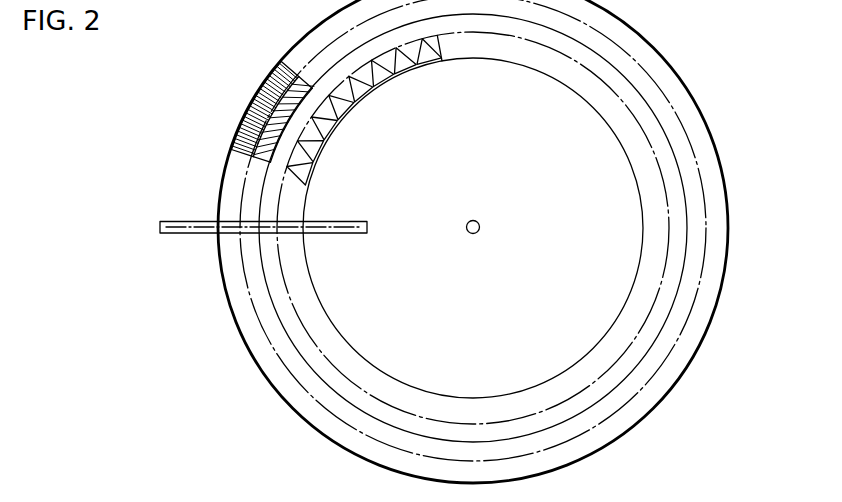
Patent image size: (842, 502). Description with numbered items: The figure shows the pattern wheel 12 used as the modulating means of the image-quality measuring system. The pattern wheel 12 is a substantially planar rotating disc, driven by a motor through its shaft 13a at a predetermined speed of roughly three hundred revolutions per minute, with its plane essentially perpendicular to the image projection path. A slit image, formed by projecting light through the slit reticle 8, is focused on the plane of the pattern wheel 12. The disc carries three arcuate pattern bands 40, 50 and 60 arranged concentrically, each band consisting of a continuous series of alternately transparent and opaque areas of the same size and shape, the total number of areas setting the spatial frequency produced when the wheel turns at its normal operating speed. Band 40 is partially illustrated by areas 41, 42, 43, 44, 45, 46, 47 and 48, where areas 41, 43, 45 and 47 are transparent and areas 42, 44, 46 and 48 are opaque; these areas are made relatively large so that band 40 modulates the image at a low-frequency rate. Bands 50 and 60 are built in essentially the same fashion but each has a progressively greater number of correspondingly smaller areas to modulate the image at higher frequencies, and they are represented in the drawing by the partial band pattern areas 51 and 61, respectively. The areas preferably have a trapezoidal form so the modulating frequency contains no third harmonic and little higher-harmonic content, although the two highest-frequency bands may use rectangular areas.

The pattern wheel 12 is at (668, 50).
The pattern band 40 is at (643, 110).
The pattern band 50 is at (678, 137).
The pattern band 60 is at (712, 168).
The slit reticle 8 is at (186, 220).
The shaft 13a is at (477, 220).
The partial band pattern area 61 is at (250, 107).
The partial band pattern area 51 is at (300, 79).
The transparent area 41 is at (313, 170).
The opaque area 42 is at (310, 151).
The transparent area 43 is at (331, 121).
The opaque area 44 is at (333, 112).
The transparent area 45 is at (354, 97).
The opaque area 46 is at (363, 84).
The transparent area 47 is at (410, 66).
The opaque area 48 is at (436, 62).